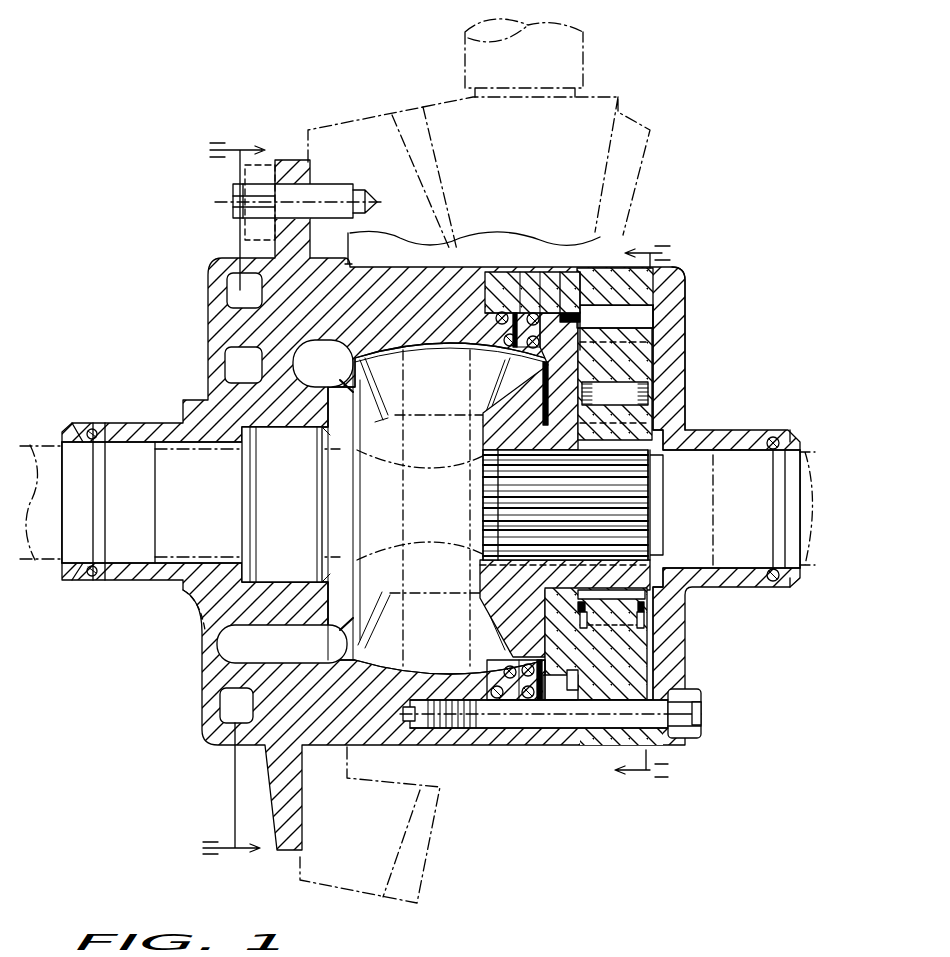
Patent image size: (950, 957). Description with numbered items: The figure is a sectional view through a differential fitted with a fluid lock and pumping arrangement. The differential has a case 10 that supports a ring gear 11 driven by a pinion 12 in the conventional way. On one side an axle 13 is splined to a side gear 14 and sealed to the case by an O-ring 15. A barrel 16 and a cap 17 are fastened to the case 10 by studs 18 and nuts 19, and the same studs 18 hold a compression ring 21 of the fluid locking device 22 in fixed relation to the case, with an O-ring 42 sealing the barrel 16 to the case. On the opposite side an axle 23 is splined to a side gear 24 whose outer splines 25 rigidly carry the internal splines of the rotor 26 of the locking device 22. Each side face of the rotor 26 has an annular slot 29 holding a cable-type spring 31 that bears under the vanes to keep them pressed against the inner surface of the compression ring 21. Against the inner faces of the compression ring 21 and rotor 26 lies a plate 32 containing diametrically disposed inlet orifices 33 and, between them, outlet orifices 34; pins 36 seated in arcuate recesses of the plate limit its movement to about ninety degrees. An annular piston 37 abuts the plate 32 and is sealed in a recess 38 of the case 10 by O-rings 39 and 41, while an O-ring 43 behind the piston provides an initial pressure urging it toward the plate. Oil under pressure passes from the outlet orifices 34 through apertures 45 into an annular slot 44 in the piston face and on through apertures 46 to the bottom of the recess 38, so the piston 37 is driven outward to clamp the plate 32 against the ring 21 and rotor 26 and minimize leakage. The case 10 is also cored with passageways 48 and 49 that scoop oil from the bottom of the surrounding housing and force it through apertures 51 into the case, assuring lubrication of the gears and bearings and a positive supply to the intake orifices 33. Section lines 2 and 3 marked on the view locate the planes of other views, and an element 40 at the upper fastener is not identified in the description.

The case 10 is at (212, 265).
The ring gear 11 is at (360, 118).
The pinion 12 is at (628, 150).
The axle 13 is at (112, 582).
The side gear 14 is at (300, 642).
The O-ring 15 is at (95, 428).
The barrel 16 is at (510, 745).
The cap 17 is at (571, 689).
The studs 18 is at (688, 690).
The nuts 19 is at (703, 735).
The compression ring 21 is at (684, 278).
The fluid locking device 22 is at (652, 378).
The axle 23 is at (742, 456).
The side gear 24 is at (668, 425).
The outer splines 25 is at (660, 402).
The rotor 26 is at (660, 384).
The annular slot 29 is at (578, 618).
The spring 31 is at (644, 630).
The plate 32 is at (565, 316).
The inlet orifices 33 is at (640, 292).
The outlet orifices 34 is at (630, 644).
The pins 36 is at (648, 318).
The annular piston 37 is at (512, 740).
The recess 38 is at (492, 684).
The O-ring 39 is at (512, 312).
The clamp bolt 40 is at (300, 202).
The O-ring 41 is at (538, 300).
The O-ring 42 is at (492, 298).
The O-ring 43 is at (502, 330).
The annular slot 44 is at (520, 318).
The apertures 45 is at (548, 705).
The apertures 46 is at (522, 702).
The passageway 48 is at (235, 366).
The passageway 49 is at (232, 293).
The apertures 51 is at (228, 637).
The section line 2- 2 is at (642, 518).
The section line 3- 3 is at (234, 502).